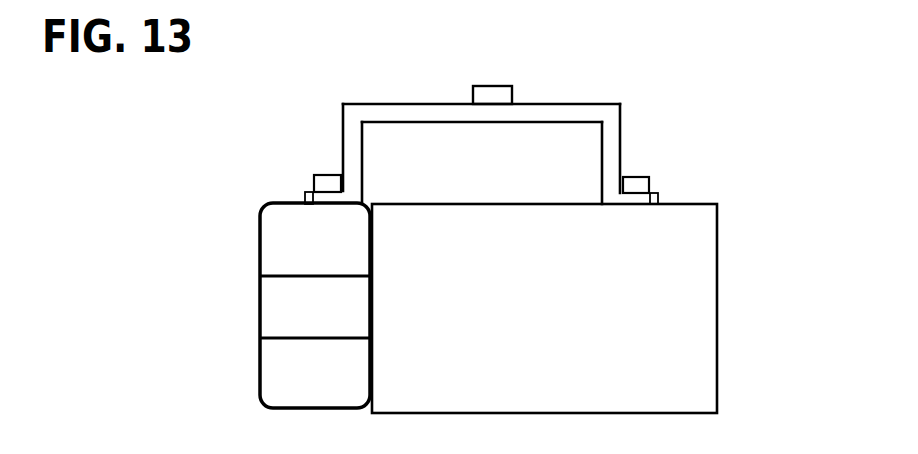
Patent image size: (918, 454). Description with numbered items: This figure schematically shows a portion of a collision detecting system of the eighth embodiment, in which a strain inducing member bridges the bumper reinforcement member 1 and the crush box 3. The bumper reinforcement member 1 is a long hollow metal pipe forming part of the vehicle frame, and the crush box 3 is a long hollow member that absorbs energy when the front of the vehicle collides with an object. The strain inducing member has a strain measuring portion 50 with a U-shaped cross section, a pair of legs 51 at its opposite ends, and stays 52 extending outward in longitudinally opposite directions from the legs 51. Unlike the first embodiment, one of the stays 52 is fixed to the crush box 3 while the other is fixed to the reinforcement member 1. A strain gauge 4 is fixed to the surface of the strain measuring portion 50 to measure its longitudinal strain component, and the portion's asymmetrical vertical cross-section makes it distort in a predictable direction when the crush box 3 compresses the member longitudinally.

The bumper reinforcement member 1 is at (276, 306).
The crush box 3 is at (700, 297).
The strain gauge 4 is at (495, 97).
The strain measuring portion 50 is at (557, 113).
The legs 51 is at (345, 138).
The stays 52 is at (311, 196).